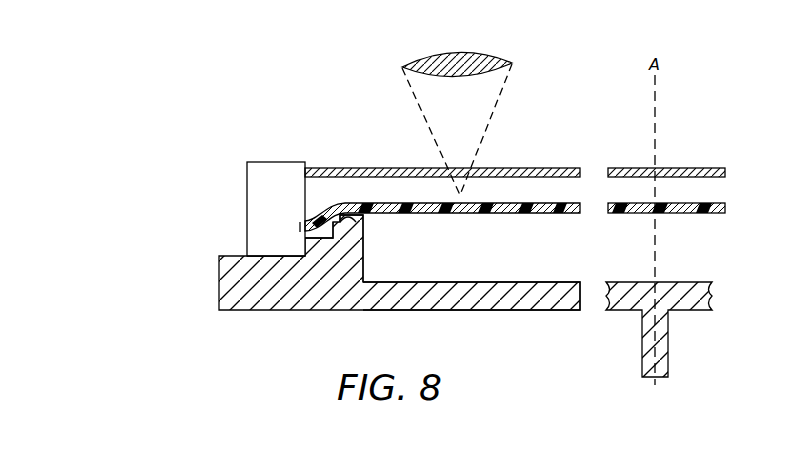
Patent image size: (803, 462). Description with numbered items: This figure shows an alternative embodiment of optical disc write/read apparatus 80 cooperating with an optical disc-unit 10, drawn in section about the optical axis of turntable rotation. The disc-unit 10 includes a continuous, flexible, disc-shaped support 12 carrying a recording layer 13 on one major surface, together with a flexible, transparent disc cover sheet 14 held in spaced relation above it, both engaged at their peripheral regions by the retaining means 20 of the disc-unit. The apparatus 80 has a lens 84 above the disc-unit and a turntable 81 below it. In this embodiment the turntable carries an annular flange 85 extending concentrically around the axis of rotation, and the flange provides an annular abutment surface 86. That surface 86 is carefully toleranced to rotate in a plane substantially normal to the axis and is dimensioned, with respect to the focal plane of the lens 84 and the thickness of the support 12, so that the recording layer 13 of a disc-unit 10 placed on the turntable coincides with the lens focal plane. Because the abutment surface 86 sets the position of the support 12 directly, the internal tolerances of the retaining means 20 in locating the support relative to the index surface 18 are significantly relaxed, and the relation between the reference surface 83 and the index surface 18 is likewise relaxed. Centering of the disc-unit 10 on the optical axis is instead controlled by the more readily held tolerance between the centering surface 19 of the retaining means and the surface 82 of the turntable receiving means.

The optical disc-unit 10 is at (368, 138).
The disc-shaped support 12 is at (546, 214).
The recording layer 13 is at (545, 207).
The disc cover sheet 14 is at (548, 171).
The index surface 18 is at (278, 258).
The centering surface 19 is at (300, 232).
The retaining means 20 is at (238, 175).
The apparatus 80 is at (192, 256).
The turntable 81 is at (493, 306).
The surface of the turntable receiving means 82 is at (318, 250).
The reference surface 83 is at (255, 274).
The lens 84 is at (492, 62).
The annular flange 85 is at (355, 229).
The annular abutment surface 86 is at (369, 248).